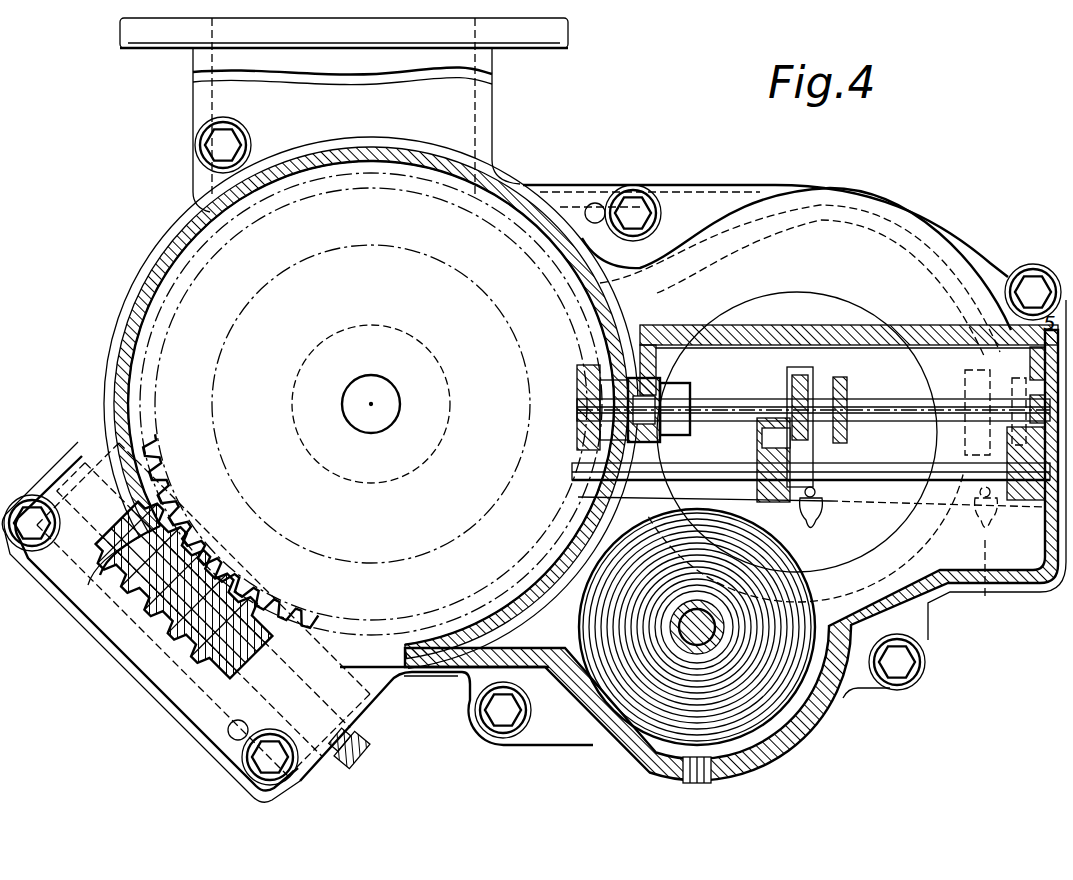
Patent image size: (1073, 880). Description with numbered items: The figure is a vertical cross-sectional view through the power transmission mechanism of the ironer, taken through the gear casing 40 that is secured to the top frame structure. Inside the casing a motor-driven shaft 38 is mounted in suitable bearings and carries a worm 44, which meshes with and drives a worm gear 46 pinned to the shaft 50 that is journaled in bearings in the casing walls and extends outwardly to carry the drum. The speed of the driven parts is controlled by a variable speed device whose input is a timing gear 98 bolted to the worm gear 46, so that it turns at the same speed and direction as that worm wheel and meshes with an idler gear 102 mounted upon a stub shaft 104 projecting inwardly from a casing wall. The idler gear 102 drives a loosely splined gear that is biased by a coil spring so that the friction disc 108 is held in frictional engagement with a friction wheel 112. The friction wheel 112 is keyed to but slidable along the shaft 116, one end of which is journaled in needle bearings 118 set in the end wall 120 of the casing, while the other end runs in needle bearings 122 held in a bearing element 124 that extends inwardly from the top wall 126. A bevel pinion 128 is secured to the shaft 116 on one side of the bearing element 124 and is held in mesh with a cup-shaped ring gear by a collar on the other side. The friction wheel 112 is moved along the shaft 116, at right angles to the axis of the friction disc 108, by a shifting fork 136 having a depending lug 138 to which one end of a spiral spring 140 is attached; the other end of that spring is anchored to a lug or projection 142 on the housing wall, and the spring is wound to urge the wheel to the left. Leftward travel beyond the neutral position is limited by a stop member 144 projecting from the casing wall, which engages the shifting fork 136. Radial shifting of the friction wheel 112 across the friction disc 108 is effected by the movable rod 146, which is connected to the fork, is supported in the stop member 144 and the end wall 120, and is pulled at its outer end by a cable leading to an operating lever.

The shaft 38 is at (366, 750).
The gear casing 40 is at (463, 672).
The worm 44 is at (142, 668).
The worm gear 46 is at (163, 296).
The shaft 50 is at (371, 392).
The timing gear 98 is at (394, 563).
The idler gear 102 is at (486, 545).
The stub shaft 104 is at (862, 318).
The friction disc 108 is at (866, 228).
The friction wheel 112 is at (800, 370).
The shaft 116 is at (878, 396).
The needle bearings 118 is at (1032, 421).
The end wall 120 is at (1040, 372).
The needle bearings 122 is at (676, 384).
The bearing element 124 is at (648, 330).
The top wall 126 is at (748, 326).
The bevel pinion 128 is at (576, 409).
The shifting fork 136 is at (838, 450).
The lug 138 is at (816, 525).
The spiral spring 140 is at (822, 715).
The lug or projection 142 is at (625, 742).
The stop member 144 is at (757, 436).
The movable rod 146 is at (922, 490).